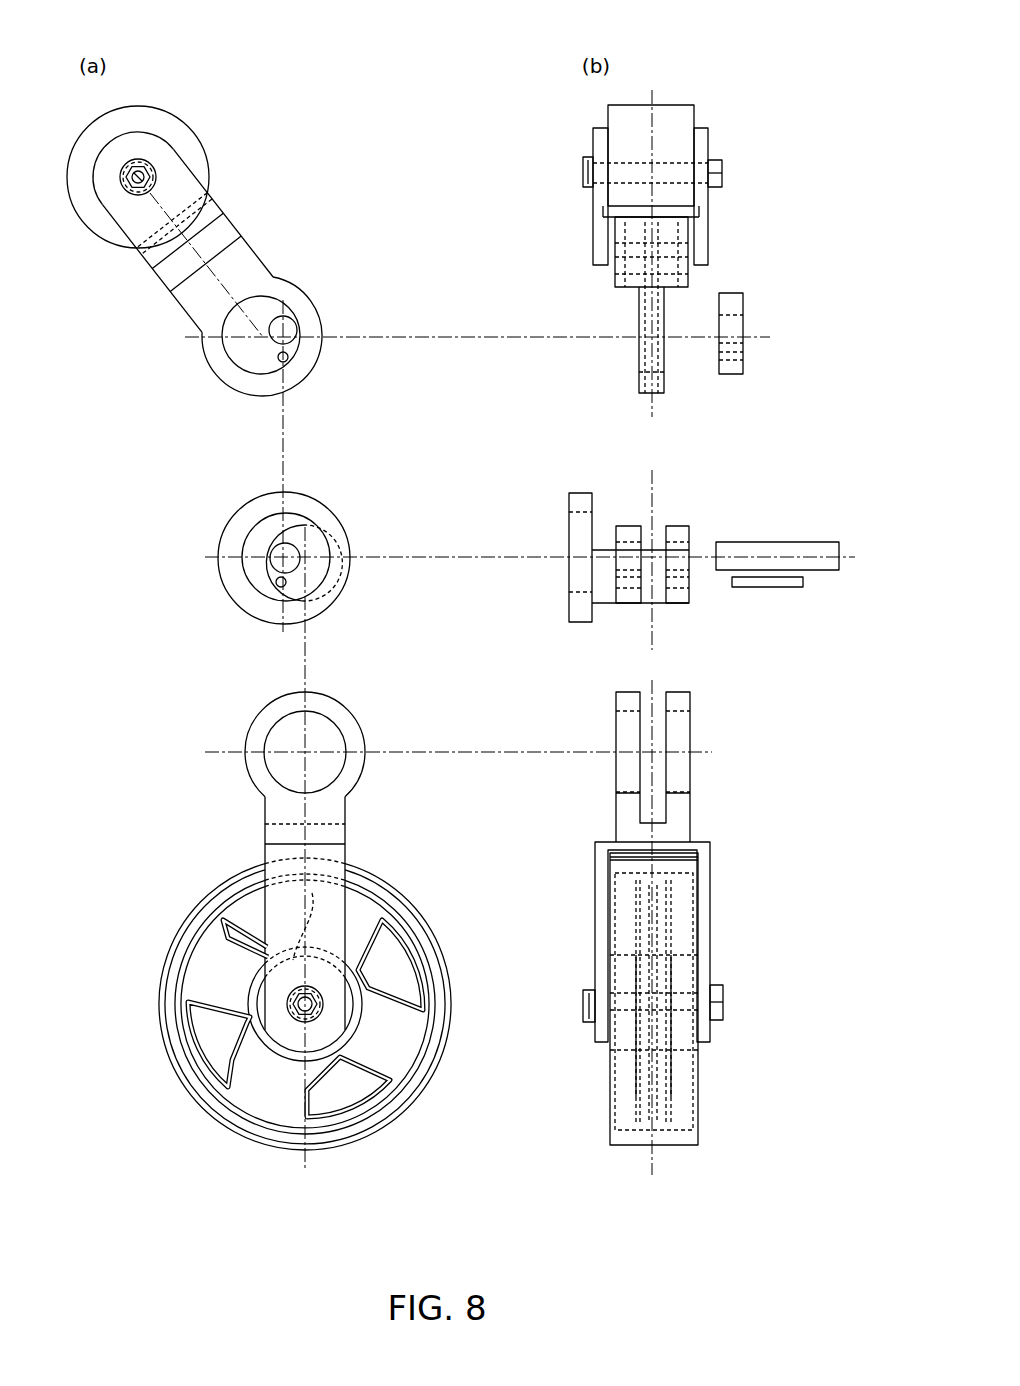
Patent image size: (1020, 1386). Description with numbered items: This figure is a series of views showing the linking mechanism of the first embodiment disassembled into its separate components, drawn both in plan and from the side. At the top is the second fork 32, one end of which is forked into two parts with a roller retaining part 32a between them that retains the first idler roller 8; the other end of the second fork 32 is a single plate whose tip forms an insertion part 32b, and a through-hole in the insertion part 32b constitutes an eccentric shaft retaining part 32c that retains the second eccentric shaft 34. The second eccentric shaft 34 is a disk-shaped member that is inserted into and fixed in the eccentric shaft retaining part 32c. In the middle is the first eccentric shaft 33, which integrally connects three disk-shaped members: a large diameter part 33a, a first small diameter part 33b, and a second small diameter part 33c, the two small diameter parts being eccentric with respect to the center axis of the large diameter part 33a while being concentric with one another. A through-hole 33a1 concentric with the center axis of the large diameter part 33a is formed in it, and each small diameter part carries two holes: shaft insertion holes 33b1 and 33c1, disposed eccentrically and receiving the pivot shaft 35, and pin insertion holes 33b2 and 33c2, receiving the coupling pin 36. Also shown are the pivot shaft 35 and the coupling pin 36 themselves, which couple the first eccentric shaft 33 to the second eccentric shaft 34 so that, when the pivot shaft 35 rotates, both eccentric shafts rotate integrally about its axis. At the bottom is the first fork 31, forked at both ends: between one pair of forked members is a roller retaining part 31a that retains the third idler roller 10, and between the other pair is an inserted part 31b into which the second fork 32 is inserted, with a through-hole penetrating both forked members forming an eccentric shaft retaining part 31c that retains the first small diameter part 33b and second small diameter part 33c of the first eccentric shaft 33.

The first idler roller 8 is at (178, 131).
The third idler roller 10 is at (205, 1103).
The first fork 31 is at (357, 818).
The roller retaining part 31a is at (330, 913).
The inserted part 31b is at (280, 809).
The eccentric shaft retaining part 31c is at (288, 767).
The second fork 32 is at (265, 242).
The roller retaining part 32a is at (147, 262).
The insertion part 32b is at (190, 297).
The eccentric shaft retaining part 32c is at (285, 306).
The first eccentric shaft 33 is at (322, 496).
The large diameter part 33a is at (232, 537).
The through-hole 33a1 is at (585, 600).
The first small diameter part 33b is at (313, 543).
The shaft insertion hole 33b1 is at (628, 551).
The pin insertion hole 33b2 is at (628, 585).
The second small diameter part 33c is at (673, 530).
The shaft insertion hole 33c1 is at (687, 548).
The pin insertion hole 33c2 is at (685, 583).
The second eccentric shaft 34 is at (242, 350).
The pivot shaft 35 is at (272, 563).
The coupling pin 36 is at (270, 580).